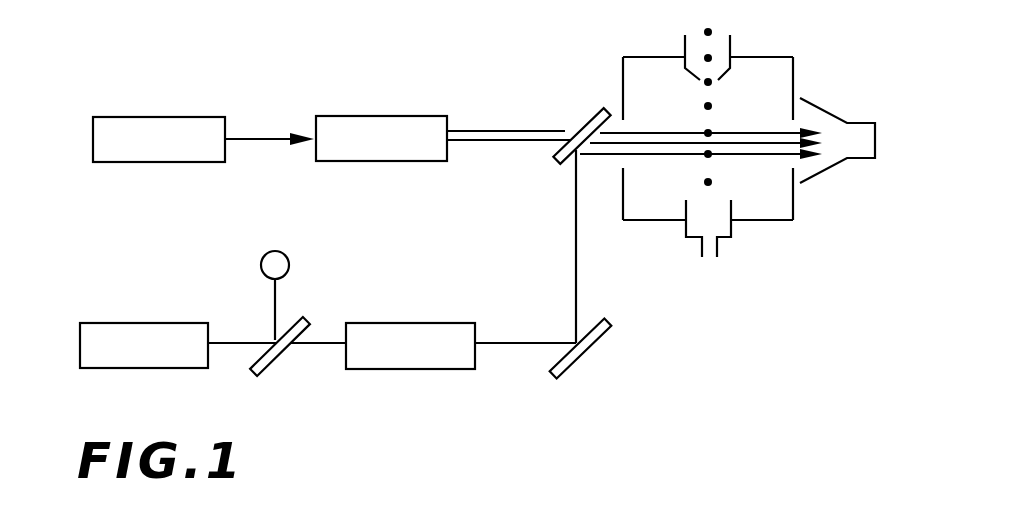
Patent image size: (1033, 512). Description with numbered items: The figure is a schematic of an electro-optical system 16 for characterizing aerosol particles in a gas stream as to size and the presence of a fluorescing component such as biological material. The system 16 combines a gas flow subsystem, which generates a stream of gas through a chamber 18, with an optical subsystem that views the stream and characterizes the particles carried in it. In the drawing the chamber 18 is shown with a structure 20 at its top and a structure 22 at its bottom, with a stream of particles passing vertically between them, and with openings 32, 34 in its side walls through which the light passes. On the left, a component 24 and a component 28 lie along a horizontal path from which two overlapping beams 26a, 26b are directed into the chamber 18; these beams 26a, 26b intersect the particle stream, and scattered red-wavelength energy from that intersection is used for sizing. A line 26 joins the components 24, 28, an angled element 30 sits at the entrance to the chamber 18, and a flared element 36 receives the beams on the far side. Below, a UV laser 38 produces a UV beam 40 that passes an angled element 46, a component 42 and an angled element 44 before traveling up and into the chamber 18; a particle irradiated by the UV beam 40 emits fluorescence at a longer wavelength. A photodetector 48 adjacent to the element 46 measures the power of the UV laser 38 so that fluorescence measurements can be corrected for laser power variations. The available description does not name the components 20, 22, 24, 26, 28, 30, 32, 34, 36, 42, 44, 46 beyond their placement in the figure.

The electro-optical system 16 is at (240, 29).
The chamber 18 is at (623, 60).
The nozzle 20 is at (735, 40).
The collector 22 is at (735, 208).
The laser 24 is at (107, 117).
The laser beam 26 is at (258, 138).
The beam 26a is at (495, 130).
The beam 26b is at (471, 141).
The optics 28 is at (370, 116).
The mirror 30 is at (560, 160).
The entrance aperture 32 is at (622, 162).
The exit aperture 34 is at (790, 162).
The beam dump 36 is at (830, 112).
The UV laser 38 is at (138, 323).
The UV beam 40 is at (512, 345).
The second optics 42 is at (410, 323).
The mirror 44 is at (600, 347).
The beam splitter 46 is at (280, 365).
The photodetector 48 is at (262, 253).